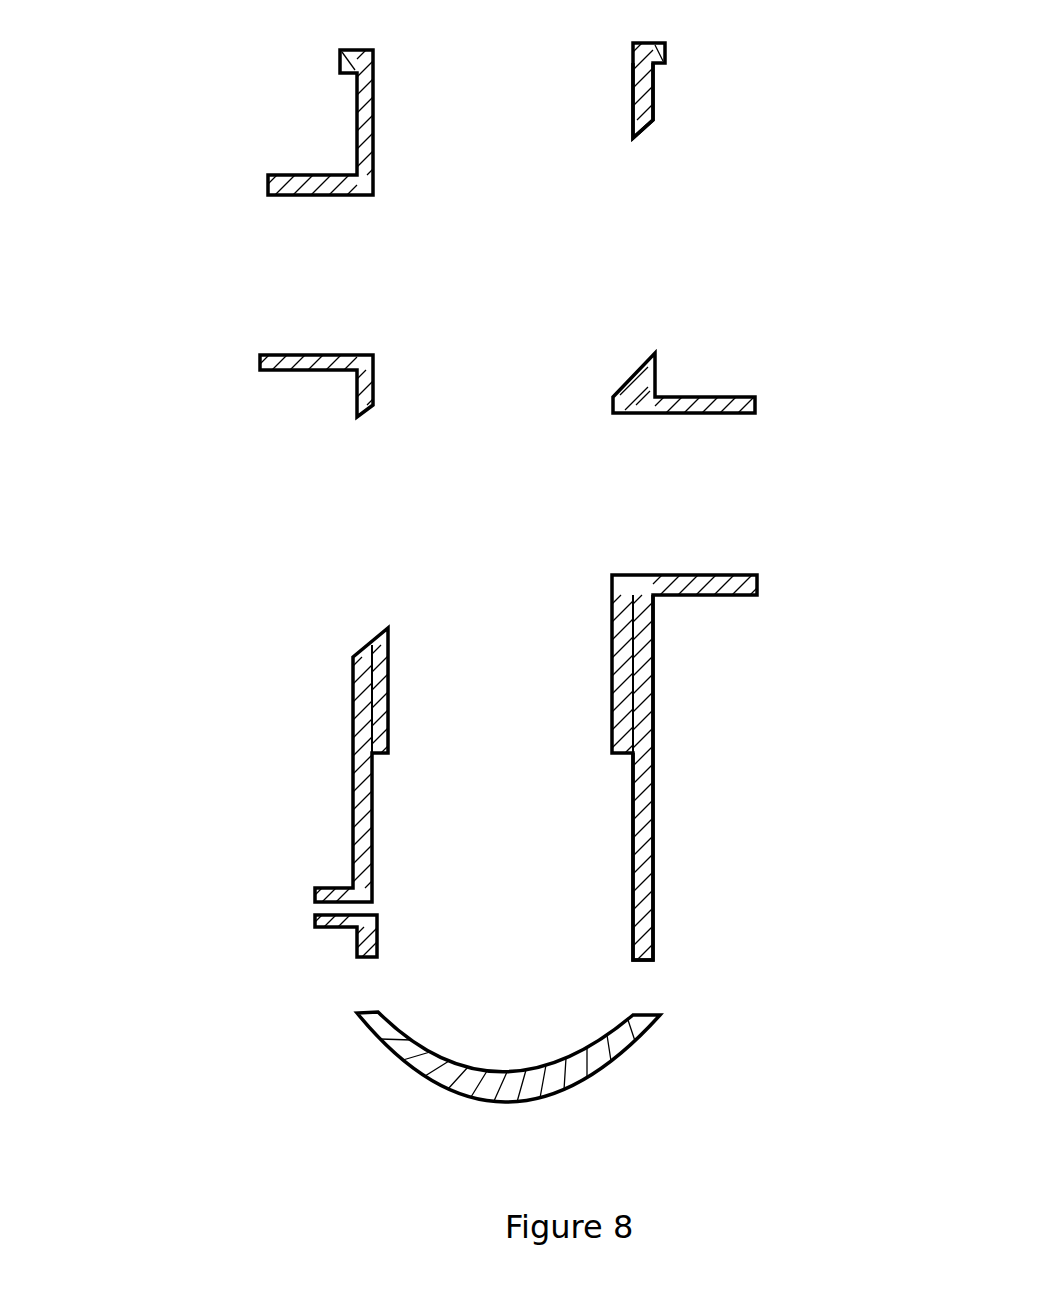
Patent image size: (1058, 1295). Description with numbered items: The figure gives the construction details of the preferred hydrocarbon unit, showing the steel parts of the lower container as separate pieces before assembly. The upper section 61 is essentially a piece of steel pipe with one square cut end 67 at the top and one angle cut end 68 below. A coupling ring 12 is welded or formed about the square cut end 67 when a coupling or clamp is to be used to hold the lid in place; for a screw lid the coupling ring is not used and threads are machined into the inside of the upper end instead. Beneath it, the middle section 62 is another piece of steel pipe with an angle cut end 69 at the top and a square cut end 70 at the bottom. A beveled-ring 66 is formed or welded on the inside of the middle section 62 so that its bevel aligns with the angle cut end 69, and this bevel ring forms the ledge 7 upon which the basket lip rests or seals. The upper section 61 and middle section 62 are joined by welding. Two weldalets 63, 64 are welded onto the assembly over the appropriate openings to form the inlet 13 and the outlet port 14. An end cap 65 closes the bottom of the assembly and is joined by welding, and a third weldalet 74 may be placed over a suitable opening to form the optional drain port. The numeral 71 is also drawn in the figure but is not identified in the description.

The ledge 7 is at (620, 382).
The coupling ring 12 is at (675, 52).
The inlet 13 is at (292, 265).
The outlet port 14 is at (727, 495).
The upper section 61 is at (655, 98).
The middle section 62 is at (653, 848).
The weldalet 63 is at (283, 372).
The weldalet 64 is at (730, 597).
The end cap 65 is at (628, 1050).
The beveled-ring 66 is at (610, 630).
The square cut end 67 is at (502, 29).
The angle cut end 68 is at (530, 254).
The angle cut end 69 is at (487, 524).
The square cut end 70 is at (502, 954).
The bottom cavity 71 is at (512, 1024).
The third weldalet 74 is at (332, 925).